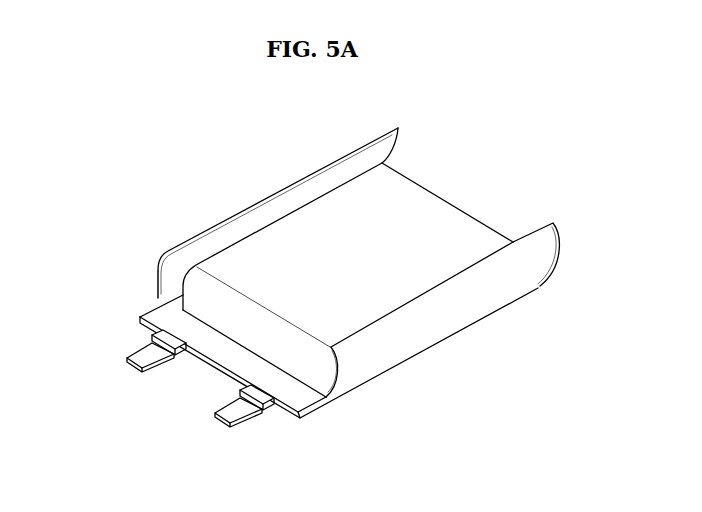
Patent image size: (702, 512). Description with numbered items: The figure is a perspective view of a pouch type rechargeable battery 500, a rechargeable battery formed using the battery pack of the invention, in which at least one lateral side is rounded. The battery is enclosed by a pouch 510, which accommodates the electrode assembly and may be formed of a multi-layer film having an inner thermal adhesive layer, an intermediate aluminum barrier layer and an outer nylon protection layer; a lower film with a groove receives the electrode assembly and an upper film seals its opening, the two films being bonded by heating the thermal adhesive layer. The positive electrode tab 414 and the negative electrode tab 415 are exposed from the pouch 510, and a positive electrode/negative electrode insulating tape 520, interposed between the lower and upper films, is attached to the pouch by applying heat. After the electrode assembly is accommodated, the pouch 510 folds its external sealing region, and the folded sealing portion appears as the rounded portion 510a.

The pouch type rechargeable battery 500 is at (321, 257).
The pouch 510 is at (455, 200).
The rounded portion 510a is at (160, 275).
The positive electrode/negative electrode insulating tape 520 is at (152, 335).
The positive electrode tab 414 is at (220, 417).
The negative electrode tab 415 is at (130, 365).